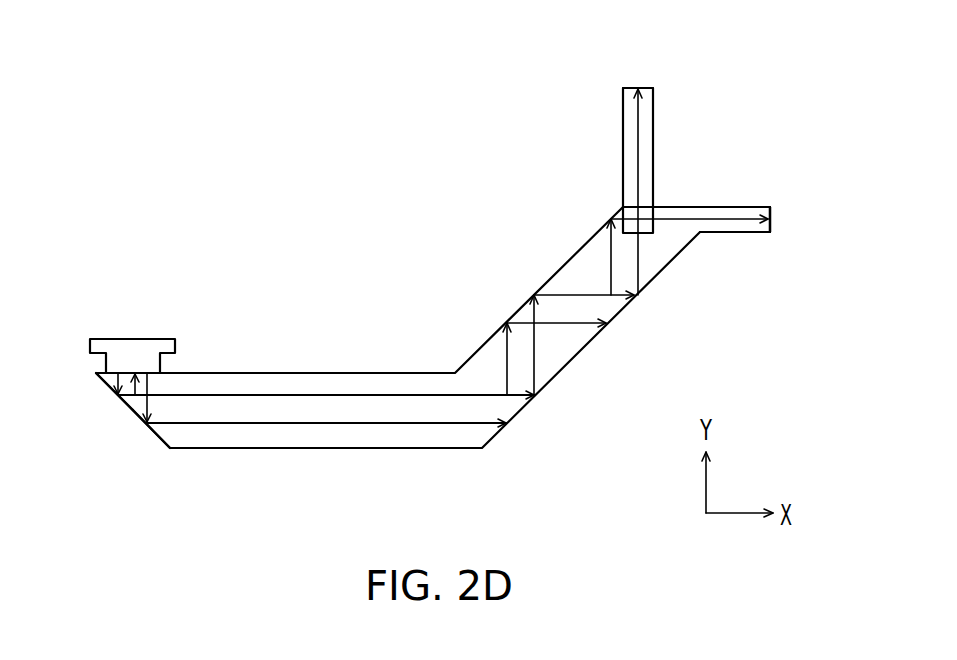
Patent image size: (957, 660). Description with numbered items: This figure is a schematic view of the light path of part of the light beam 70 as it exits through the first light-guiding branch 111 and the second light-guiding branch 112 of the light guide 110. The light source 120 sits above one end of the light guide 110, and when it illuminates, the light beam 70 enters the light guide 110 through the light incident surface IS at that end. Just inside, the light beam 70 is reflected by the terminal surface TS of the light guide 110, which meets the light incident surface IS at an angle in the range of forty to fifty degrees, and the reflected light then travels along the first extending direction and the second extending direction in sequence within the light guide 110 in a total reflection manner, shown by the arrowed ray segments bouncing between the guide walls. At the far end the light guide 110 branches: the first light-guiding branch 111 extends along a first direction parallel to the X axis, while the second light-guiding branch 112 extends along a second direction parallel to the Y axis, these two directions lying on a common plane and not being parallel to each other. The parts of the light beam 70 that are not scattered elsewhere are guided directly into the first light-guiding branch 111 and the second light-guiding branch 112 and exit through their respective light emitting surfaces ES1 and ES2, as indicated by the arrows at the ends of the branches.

The light guide 110 is at (378, 354).
The first light-guiding branch 111 is at (735, 226).
The second light-guiding branch 112 is at (645, 170).
The light source 120 is at (135, 345).
The light beam 70 is at (225, 422).
The light incident surface IS is at (123, 398).
The terminal surface TS is at (160, 433).
The light emitting surface ES1 is at (773, 213).
The light emitting surface ES2 is at (647, 87).